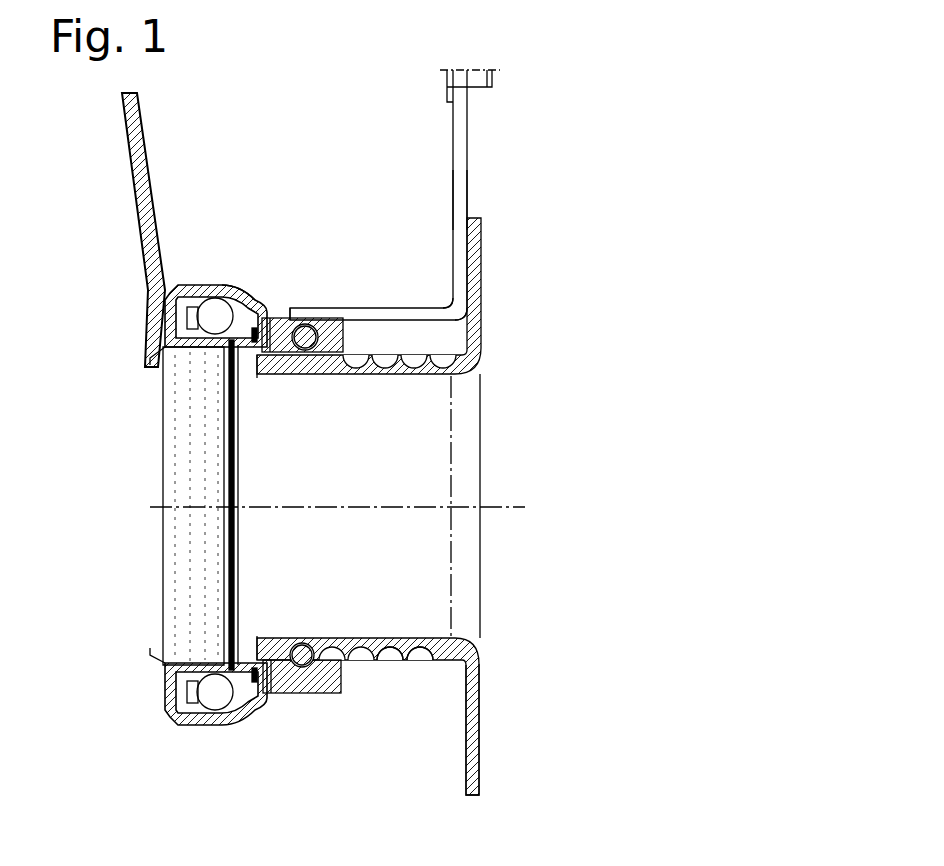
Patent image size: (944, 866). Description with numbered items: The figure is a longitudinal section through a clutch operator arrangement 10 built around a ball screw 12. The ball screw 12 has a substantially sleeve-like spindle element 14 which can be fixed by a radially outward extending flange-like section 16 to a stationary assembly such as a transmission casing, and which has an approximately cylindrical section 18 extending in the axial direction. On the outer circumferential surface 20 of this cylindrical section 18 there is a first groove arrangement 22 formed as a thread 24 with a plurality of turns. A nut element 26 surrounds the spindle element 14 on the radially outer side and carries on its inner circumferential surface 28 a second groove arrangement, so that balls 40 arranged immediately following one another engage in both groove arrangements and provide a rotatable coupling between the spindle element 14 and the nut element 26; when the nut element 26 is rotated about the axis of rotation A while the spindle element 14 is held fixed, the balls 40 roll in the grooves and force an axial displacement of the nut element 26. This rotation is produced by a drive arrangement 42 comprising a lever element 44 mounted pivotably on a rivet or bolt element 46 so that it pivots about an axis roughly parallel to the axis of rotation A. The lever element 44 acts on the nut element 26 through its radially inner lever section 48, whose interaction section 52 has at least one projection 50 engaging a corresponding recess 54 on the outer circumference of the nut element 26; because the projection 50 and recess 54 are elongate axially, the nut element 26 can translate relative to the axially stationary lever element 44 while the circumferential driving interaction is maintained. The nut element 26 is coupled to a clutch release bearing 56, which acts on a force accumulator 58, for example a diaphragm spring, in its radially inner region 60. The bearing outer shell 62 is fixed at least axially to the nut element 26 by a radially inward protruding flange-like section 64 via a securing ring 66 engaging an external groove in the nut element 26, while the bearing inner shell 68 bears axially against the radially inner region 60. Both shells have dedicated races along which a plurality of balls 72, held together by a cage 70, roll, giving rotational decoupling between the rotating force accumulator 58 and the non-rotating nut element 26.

The clutch operator arrangement 10 is at (548, 158).
The ball screw 12 is at (410, 491).
The spindle element 14 is at (410, 377).
The flange-like section 16 is at (480, 264).
The cylindrical section 18 is at (398, 637).
The outer circumferential surface 20 is at (442, 664).
The first groove arrangement 22 is at (388, 664).
The thread 24 is at (413, 664).
The nut element 26 is at (300, 694).
The inner circumferential surface 28 is at (230, 378).
The balls 40 is at (240, 628).
The drive arrangement 42 is at (456, 174).
The lever element 44 is at (458, 128).
The rivet or bolt element 46 is at (462, 78).
The radially inner lever section 48 is at (460, 200).
The projection 50 is at (350, 308).
The interaction section 52 is at (412, 308).
The recess 54 is at (290, 314).
The clutch release bearing 56 is at (146, 505).
The force accumulator 58 is at (135, 147).
The radially inner region 60 is at (148, 280).
The bearing outer shell 62 is at (158, 679).
The flange-like section 64 is at (145, 365).
The securing ring 66 is at (175, 682).
The bearing inner shell 68 is at (170, 545).
The cage 70 is at (167, 290).
The balls 72 is at (185, 268).
The axis of rotation A is at (506, 488).